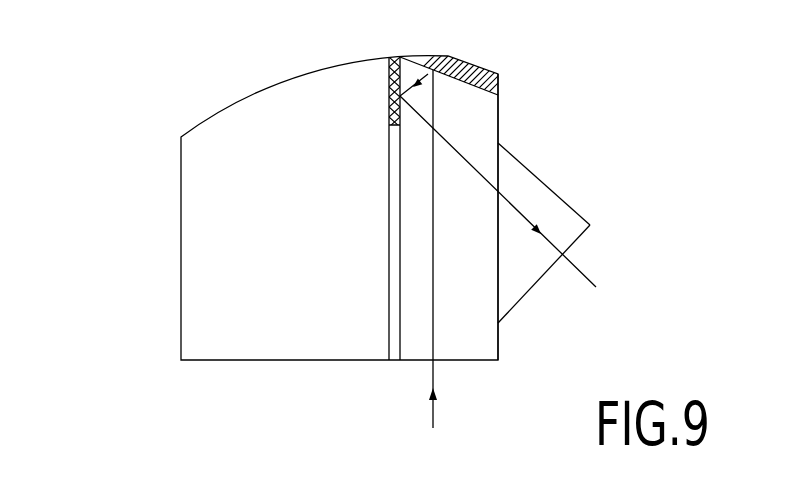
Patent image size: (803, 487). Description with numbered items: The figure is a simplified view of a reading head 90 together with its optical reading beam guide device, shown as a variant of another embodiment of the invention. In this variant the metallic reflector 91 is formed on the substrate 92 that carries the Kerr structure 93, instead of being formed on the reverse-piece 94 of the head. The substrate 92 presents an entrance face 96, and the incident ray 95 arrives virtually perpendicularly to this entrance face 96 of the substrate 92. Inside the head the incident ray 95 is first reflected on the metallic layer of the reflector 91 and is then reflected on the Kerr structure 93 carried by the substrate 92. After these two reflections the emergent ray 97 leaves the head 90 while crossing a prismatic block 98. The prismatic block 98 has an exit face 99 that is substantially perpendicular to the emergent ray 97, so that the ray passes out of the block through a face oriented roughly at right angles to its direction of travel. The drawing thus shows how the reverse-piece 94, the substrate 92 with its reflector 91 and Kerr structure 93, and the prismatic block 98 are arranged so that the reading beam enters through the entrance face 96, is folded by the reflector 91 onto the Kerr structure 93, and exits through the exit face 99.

The head 90 is at (148, 335).
The metallic reflector 91 is at (470, 72).
The substrate 92 is at (476, 120).
The Kerr structure 93 is at (388, 97).
The reverse-piece 94 is at (286, 343).
The incident ray 95 is at (437, 372).
The entrance face 96 is at (418, 362).
The emergent ray 97 is at (524, 214).
The prismatic block 98 is at (542, 282).
The exit face 99 is at (578, 238).